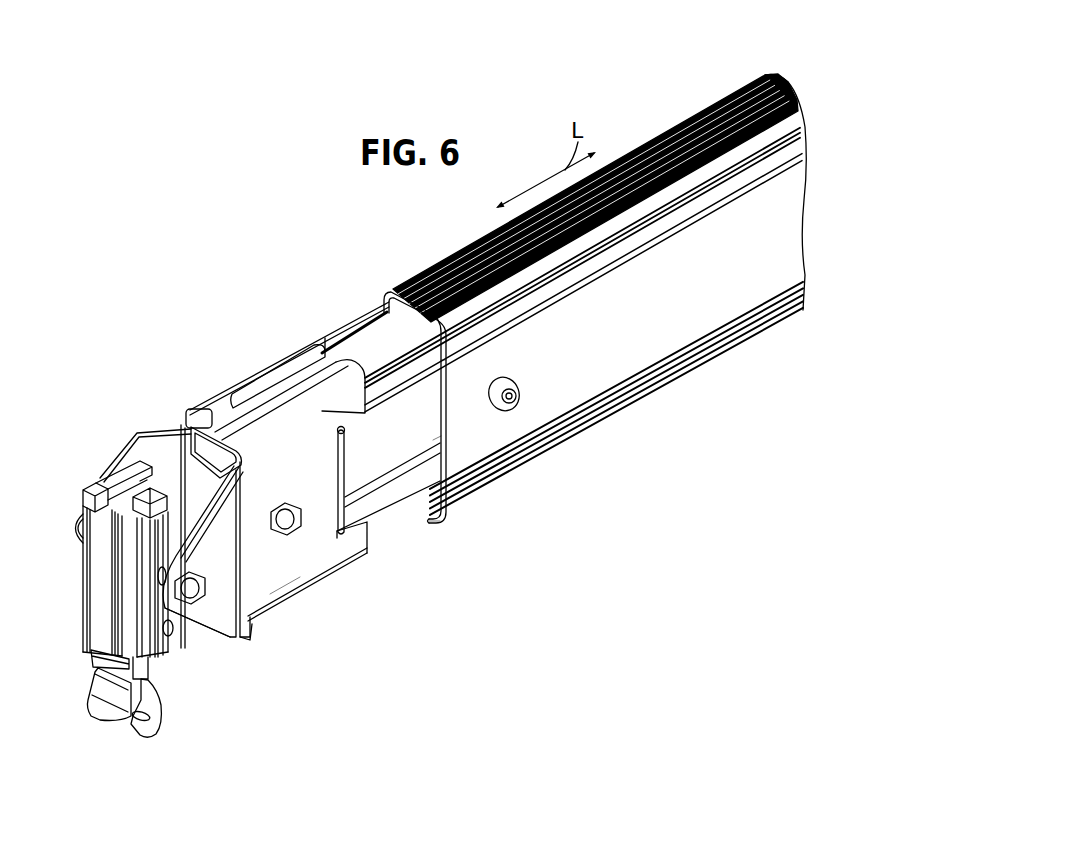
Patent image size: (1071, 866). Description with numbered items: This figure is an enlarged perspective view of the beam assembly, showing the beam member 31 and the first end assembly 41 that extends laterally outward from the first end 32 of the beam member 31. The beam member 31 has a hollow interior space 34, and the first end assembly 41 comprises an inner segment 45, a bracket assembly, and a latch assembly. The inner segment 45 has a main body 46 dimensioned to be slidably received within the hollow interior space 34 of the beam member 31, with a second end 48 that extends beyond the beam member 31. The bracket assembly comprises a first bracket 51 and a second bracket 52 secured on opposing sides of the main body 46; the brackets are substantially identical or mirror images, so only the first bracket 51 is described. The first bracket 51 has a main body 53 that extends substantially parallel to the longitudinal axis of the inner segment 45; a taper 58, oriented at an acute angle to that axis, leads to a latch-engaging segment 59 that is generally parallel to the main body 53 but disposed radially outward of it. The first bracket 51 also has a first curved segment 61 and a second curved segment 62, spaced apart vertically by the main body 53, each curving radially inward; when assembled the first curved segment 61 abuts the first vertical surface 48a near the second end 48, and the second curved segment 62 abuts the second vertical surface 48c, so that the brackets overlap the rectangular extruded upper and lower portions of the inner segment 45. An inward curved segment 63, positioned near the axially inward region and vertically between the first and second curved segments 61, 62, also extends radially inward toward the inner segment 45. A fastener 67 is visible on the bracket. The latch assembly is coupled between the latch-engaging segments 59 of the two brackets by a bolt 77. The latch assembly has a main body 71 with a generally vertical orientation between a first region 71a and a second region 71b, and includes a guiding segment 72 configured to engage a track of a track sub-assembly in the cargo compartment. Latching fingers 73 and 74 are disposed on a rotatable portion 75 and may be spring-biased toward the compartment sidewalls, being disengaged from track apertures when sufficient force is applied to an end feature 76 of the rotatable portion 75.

The beam member 31 is at (483, 246).
The first end 32 is at (413, 288).
The hollow interior space 34 is at (384, 309).
The first end assembly 41 is at (243, 361).
The inner segment 45 is at (348, 343).
The main body 46 is at (437, 435).
The second end 48 is at (189, 420).
The first vertical surface 48a is at (444, 371).
The second vertical surface 48c is at (412, 509).
The first bracket 51 is at (322, 558).
The second bracket 52 is at (302, 346).
The main body 53 is at (285, 587).
The taper 58 is at (258, 614).
The latch-engaging segment 59 is at (218, 639).
The first curved segment 61 is at (291, 418).
The second curved segment 62 is at (366, 546).
The inward curved segment 63 is at (348, 454).
The fastener 67 is at (280, 503).
The main body 71 is at (130, 582).
The first region 71a is at (95, 480).
The second region 71b is at (150, 666).
The guiding segment 72 is at (83, 516).
The latching finger 73 is at (91, 652).
The latching finger 74 is at (95, 698).
The rotatable portion 75 is at (158, 690).
The end feature 76 is at (155, 737).
The bolt 77 is at (210, 604).